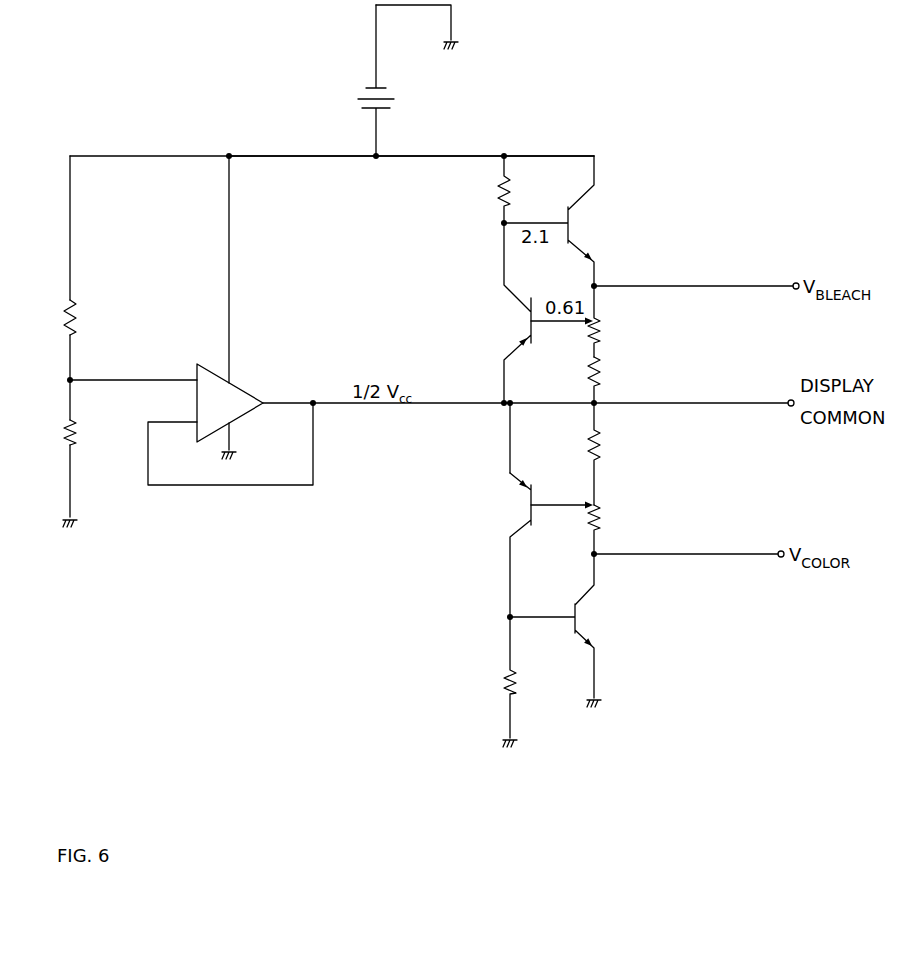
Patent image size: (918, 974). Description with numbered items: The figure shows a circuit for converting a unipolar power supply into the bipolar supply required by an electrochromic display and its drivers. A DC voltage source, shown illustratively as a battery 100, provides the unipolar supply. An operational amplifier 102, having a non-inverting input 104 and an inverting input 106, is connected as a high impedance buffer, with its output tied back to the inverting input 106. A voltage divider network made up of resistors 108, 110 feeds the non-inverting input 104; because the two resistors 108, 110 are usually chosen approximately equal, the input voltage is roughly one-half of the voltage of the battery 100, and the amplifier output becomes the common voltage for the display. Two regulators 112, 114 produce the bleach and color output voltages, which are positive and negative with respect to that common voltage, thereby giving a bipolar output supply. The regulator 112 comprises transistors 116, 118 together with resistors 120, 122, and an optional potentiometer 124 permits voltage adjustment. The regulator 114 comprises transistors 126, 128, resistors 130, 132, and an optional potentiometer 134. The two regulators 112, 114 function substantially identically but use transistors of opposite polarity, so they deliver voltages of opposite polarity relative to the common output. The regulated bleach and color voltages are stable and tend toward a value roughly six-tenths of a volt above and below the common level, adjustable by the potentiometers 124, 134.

The battery 100 is at (364, 90).
The operational amplifier 102 is at (246, 390).
The non-inverting input 104 is at (187, 377).
The inverting input 106 is at (190, 423).
The resistor 108 is at (73, 318).
The resistor 110 is at (79, 441).
The regulator 112 is at (372, 221).
The regulator 114 is at (412, 469).
The transistor 116 is at (588, 194).
The transistor 118 is at (512, 297).
The resistor 120 is at (507, 184).
The resistor 122 is at (590, 368).
The potentiometer 124 is at (594, 318).
The transistor 126 is at (531, 512).
The transistor 128 is at (583, 597).
The resistor 130 is at (513, 673).
The resistor 132 is at (590, 449).
The potentiometer 134 is at (595, 503).